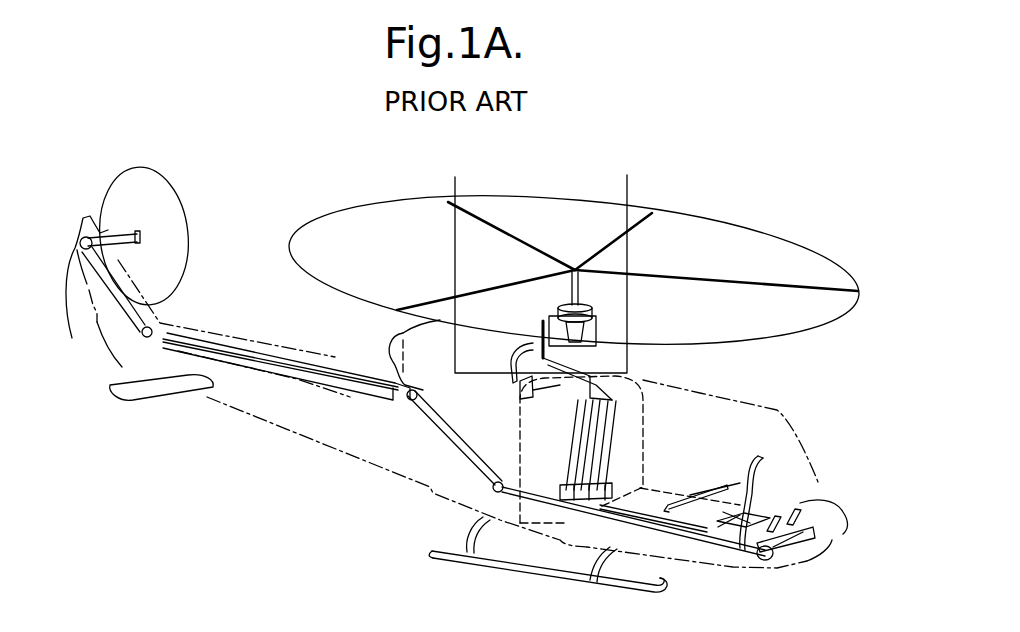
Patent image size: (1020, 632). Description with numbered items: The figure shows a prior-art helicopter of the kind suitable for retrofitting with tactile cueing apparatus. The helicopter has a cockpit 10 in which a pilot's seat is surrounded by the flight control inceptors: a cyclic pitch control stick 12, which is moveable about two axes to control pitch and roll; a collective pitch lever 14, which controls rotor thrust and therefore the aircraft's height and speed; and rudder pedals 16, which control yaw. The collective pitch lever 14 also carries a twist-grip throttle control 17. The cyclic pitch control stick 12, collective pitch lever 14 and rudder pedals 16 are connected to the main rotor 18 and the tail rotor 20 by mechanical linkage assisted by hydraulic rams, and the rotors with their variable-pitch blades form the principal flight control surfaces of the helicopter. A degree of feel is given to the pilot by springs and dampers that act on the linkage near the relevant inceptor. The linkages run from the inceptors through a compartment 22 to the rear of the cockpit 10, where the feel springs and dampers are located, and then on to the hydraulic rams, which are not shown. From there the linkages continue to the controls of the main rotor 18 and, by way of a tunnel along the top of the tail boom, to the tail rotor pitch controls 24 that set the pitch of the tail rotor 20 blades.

The cockpit 10 is at (795, 455).
The cyclic pitch control stick 12 is at (741, 552).
The collective pitch lever 14 is at (694, 493).
The rudder pedals 16 is at (800, 508).
The twist-grip throttle control 17 is at (718, 487).
The main rotor 18 is at (756, 248).
The tail rotor 20 is at (160, 187).
The compartment 22 is at (612, 428).
The tail rotor pitch controls 24 is at (72, 338).